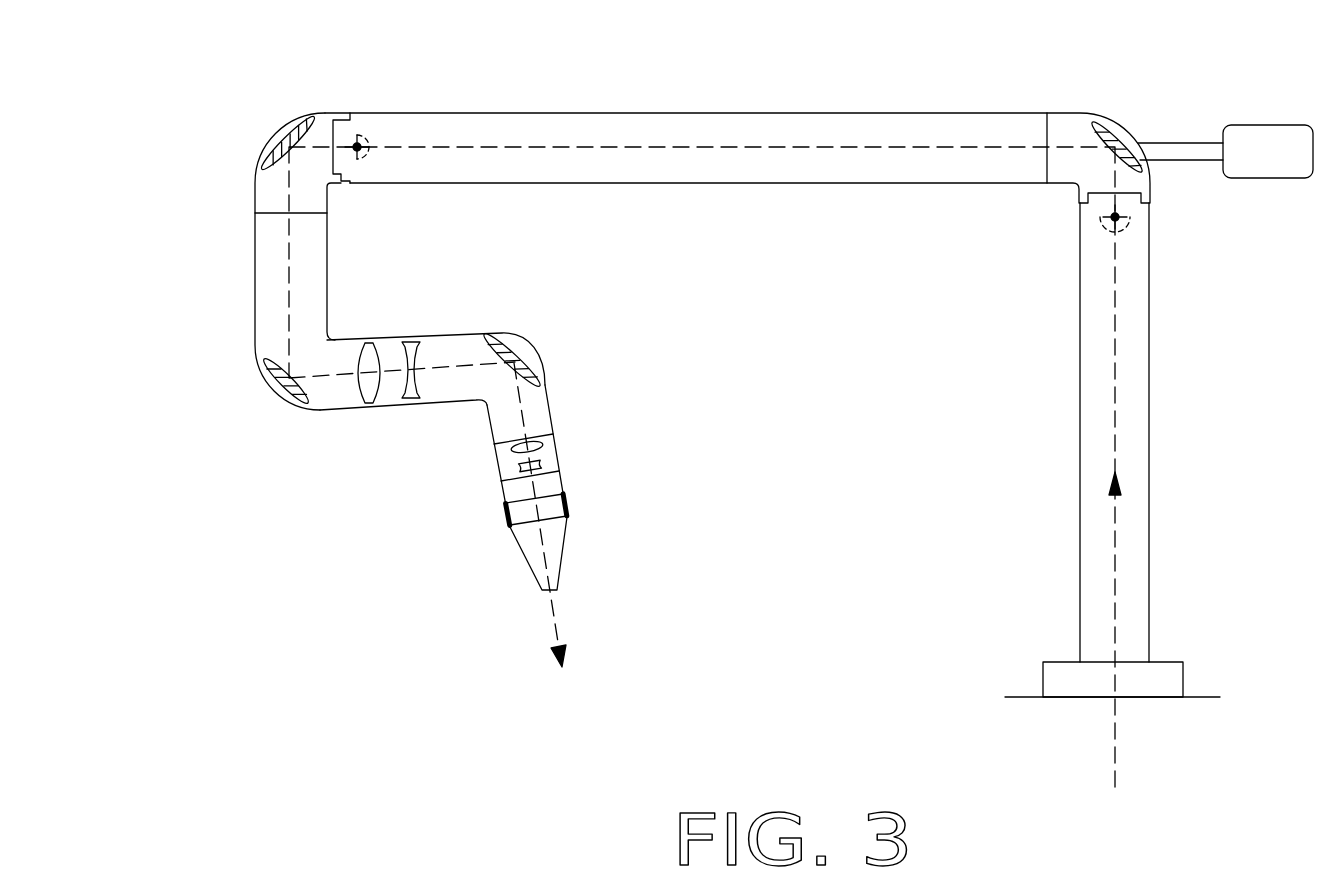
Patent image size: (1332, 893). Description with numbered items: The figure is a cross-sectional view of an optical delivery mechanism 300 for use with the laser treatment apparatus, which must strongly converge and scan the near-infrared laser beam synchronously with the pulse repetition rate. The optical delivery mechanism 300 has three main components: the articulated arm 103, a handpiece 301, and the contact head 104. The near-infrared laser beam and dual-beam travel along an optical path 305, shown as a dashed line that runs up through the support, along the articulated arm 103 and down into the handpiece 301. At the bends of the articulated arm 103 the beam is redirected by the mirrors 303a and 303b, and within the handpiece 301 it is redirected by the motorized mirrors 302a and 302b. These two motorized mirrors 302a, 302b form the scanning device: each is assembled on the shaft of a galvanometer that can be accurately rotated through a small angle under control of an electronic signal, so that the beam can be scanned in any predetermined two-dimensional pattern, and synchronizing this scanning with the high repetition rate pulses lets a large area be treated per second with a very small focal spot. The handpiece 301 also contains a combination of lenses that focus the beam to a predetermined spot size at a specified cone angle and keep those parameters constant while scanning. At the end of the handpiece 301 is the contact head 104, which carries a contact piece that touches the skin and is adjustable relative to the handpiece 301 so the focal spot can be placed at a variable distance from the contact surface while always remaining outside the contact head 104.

The articulated arm 103 is at (740, 122).
The contact head 104 is at (560, 540).
The optical delivery mechanism 300 is at (528, 98).
The handpiece 301 is at (433, 445).
The motorized mirror 302a is at (278, 380).
The motorized mirror 302b is at (510, 343).
The mirror 303a is at (1112, 125).
The mirror 303b is at (283, 138).
The optical path 305 is at (873, 150).